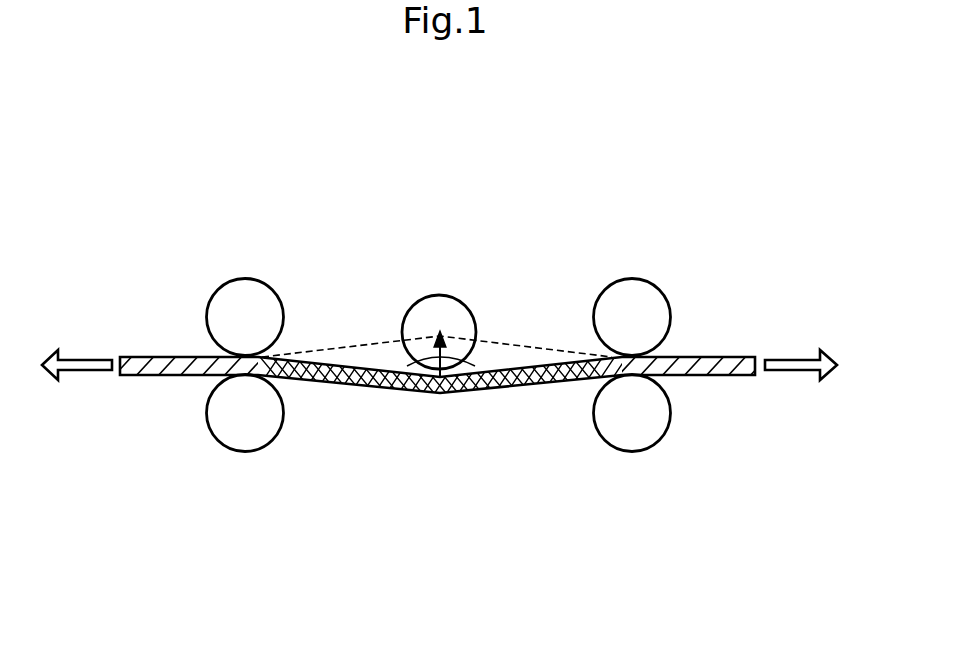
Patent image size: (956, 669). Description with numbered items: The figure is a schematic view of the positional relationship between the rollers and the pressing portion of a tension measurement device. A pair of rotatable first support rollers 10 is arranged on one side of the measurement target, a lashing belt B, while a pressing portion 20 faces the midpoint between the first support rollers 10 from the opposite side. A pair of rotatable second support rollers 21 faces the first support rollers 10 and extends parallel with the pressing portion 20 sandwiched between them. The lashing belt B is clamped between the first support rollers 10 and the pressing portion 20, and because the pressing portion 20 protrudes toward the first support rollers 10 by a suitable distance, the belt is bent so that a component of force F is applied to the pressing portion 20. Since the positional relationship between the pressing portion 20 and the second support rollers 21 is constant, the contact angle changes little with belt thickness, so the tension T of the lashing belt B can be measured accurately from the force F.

The first support roller 10 is at (220, 423).
The pressing portion 20 is at (440, 305).
The second support roller 21 is at (242, 292).
The lashing belt B is at (712, 357).
The component of force F is at (412, 356).
The tension T is at (439, 388).